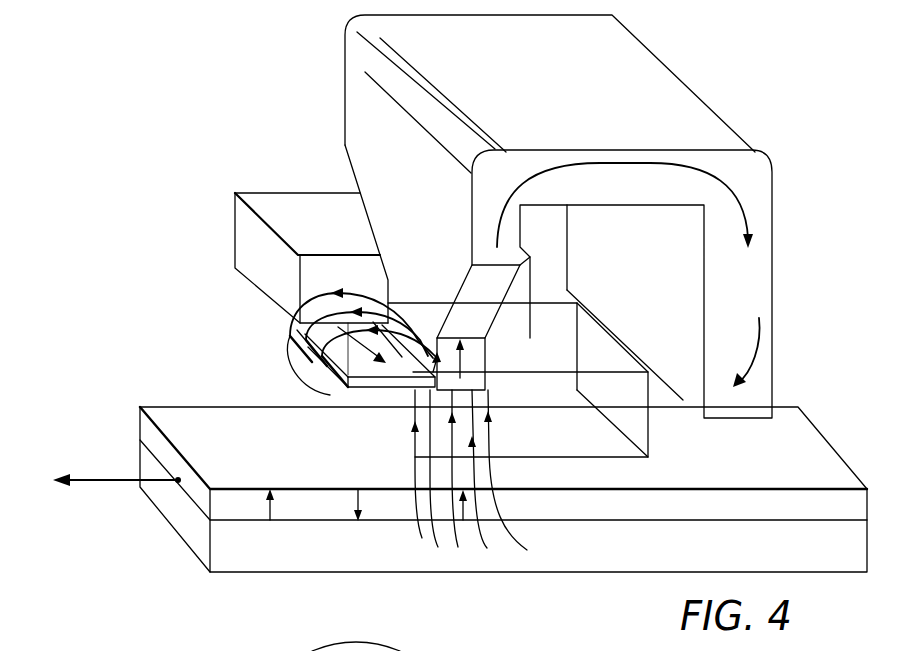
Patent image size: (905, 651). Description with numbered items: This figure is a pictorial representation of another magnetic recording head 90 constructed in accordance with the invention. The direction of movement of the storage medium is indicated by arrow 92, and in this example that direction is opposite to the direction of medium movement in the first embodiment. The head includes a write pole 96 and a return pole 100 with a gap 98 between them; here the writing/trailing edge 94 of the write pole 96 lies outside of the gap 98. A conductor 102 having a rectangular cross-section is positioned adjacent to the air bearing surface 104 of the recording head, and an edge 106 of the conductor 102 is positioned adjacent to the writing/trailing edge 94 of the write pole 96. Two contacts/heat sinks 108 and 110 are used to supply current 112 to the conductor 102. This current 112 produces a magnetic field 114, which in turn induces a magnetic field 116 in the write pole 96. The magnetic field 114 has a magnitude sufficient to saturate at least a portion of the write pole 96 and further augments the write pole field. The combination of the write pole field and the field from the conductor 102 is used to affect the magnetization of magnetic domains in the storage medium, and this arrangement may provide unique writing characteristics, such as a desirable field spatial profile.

The magnetic recording head 90 is at (792, 116).
The arrow indicating direction of movement of the storage medium 92 is at (107, 483).
The writing/trailing edge 94 is at (416, 454).
The write pole 96 is at (432, 289).
The gap 98 is at (547, 380).
The return pole 100 is at (758, 392).
The conductor 102 is at (343, 377).
The air bearing surface 104 is at (430, 452).
The edge of conductor 106 is at (433, 378).
The contact/heat sink 108 is at (297, 200).
The contact/heat sink 110 is at (535, 445).
The current 112 is at (312, 361).
The magnetic field 114 is at (292, 323).
The magnetic field 116 is at (620, 158).